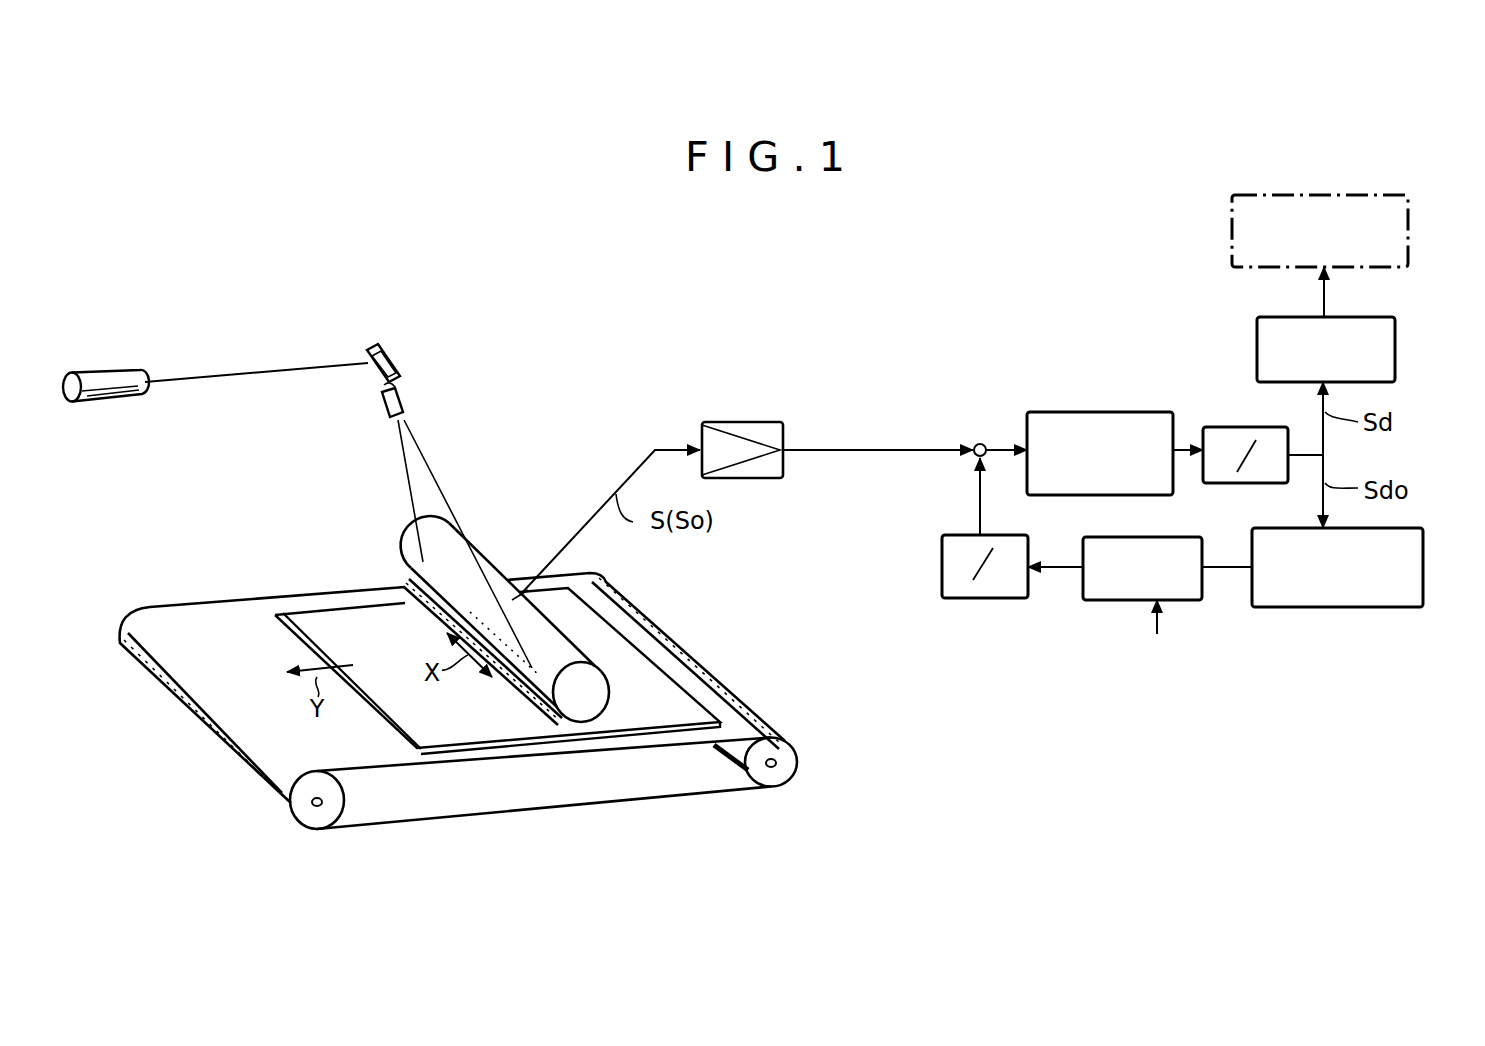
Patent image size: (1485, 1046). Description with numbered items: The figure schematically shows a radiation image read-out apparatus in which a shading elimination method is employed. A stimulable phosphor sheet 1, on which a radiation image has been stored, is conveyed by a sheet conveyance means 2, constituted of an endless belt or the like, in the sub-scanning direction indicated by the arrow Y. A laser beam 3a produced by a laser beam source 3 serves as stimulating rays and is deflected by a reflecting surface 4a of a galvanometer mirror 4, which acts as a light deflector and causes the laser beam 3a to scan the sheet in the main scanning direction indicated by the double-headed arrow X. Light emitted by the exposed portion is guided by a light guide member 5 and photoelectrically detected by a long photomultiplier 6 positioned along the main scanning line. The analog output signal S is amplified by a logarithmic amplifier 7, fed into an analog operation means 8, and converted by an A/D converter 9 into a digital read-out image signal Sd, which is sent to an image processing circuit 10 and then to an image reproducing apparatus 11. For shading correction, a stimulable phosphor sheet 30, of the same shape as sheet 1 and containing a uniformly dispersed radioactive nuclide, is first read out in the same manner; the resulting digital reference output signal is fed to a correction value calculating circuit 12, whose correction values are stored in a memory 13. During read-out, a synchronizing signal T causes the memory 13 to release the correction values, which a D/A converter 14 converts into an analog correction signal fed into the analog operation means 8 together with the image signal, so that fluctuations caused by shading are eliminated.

The stimulable phosphor sheet 1 is at (337, 617).
The stimulable phosphor sheet 30 is at (497, 644).
The sheet conveyance means 2 is at (673, 643).
The laser beam source 3 is at (112, 369).
The laser beam 3a is at (252, 371).
The galvanometer mirror 4 is at (412, 340).
The reflecting surface 4a is at (401, 371).
The light guide member 5 is at (560, 726).
The long photomultiplier 6 is at (497, 567).
The logarithmic amplifier 7 is at (765, 422).
The analog operation means 8 is at (1096, 412).
The A/D converter 9 is at (1213, 427).
The image processing circuit 10 is at (1397, 353).
The image reproducing apparatus 11 is at (1410, 250).
The correction value calculating circuit 12 is at (1425, 570).
The memory 13 is at (1153, 537).
The D/A converter 14 is at (998, 535).